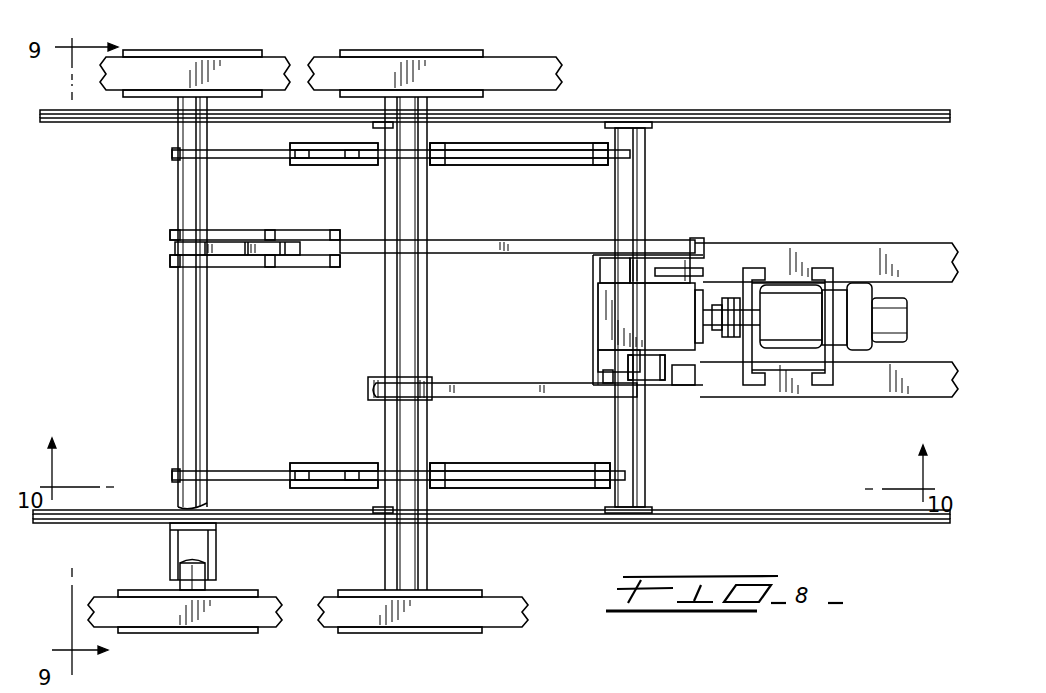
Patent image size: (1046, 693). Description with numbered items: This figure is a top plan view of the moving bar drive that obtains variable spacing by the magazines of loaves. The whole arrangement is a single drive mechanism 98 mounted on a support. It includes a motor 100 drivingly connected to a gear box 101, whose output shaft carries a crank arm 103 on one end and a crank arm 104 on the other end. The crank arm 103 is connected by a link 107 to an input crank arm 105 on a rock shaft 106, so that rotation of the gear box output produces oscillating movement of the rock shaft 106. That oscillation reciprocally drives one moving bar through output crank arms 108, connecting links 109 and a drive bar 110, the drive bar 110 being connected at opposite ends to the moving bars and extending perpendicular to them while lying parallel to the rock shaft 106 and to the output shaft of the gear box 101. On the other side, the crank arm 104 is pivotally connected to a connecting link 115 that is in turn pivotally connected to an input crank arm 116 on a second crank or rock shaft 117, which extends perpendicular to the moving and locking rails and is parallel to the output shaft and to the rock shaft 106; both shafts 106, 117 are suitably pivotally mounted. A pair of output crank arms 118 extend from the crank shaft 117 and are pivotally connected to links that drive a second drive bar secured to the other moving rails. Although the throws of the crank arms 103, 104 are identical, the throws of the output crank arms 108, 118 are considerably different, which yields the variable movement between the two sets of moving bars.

The drive mechanism 98 is at (834, 243).
The motor 100 is at (790, 336).
The gear box 101 is at (678, 307).
The crank arm 103 is at (642, 377).
The crank arm 104 is at (672, 236).
The input crank arm 105 is at (412, 381).
The rock shaft 106 is at (412, 443).
The link 107 is at (511, 390).
The output crank arms 108 is at (426, 165).
The connecting links 109 is at (542, 168).
The drive bar 110 is at (640, 448).
The connecting link 115 is at (520, 251).
The input crank arm 116 is at (243, 269).
The crank shaft 117 is at (190, 300).
The output crank arms 118 is at (238, 470).